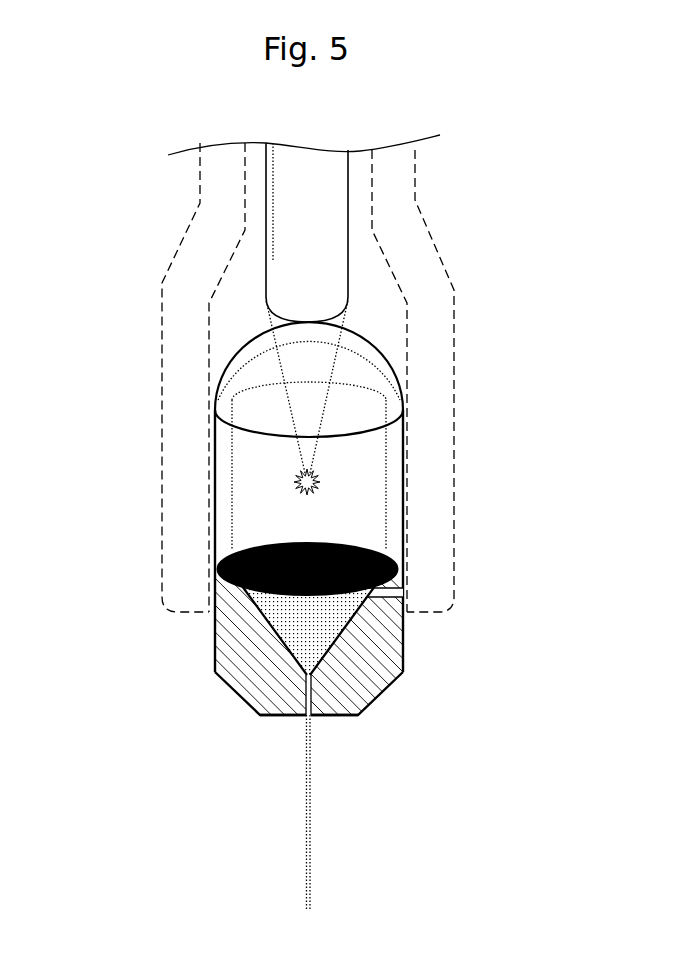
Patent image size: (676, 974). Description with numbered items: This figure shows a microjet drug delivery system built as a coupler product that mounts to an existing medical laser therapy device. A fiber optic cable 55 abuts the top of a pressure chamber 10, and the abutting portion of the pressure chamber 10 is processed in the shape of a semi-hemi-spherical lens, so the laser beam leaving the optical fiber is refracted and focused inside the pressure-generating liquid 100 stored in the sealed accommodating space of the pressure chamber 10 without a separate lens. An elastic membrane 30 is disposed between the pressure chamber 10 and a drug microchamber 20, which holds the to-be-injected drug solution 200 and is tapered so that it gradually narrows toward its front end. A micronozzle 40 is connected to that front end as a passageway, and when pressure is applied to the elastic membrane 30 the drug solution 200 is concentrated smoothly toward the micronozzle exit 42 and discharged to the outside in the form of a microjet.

The fiber optic cable 55 is at (325, 220).
The pressure chamber 10 is at (387, 453).
The pressure-generating liquid 100 is at (258, 482).
The elastic membrane 30 is at (368, 548).
The drug microchamber 20 is at (357, 637).
The to-be-injected drug solution 200 is at (290, 617).
The micronozzle 40 is at (358, 715).
The micronozzle exit 42 is at (306, 700).